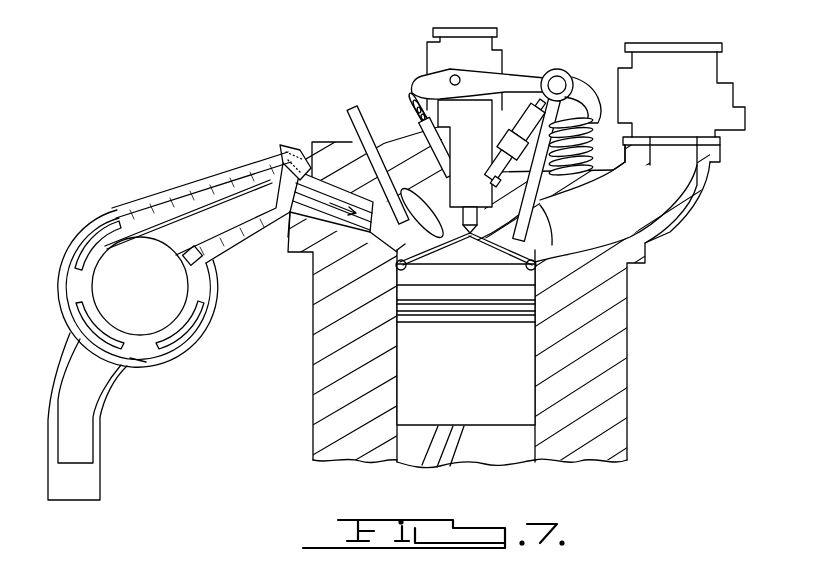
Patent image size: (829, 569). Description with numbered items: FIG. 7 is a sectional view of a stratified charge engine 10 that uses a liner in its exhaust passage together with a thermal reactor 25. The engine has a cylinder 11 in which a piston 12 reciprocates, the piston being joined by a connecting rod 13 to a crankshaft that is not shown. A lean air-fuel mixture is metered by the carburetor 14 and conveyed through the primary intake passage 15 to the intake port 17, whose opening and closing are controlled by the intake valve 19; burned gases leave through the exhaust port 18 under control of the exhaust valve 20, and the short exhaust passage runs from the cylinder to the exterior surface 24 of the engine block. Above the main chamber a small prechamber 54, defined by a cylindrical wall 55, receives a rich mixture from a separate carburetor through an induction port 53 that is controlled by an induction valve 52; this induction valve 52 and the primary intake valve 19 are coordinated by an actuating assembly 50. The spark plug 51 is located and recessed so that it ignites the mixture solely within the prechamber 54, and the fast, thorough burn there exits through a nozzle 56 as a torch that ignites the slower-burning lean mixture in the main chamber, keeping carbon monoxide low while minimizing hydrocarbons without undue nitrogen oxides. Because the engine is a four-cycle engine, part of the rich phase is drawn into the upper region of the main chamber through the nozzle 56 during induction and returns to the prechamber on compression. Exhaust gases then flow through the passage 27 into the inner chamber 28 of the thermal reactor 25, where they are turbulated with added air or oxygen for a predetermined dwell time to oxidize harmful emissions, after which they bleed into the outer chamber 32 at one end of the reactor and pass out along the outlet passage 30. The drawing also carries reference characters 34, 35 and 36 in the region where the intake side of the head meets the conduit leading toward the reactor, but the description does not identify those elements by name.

The engine 10 is at (632, 370).
The cylinder 11 is at (403, 375).
The piston 12 is at (397, 325).
The connecting rod 13 is at (467, 464).
The carburetor 14 is at (665, 67).
The primary intake passage 15 is at (672, 212).
The intake port 17 is at (537, 269).
The exhaust port 18 is at (396, 290).
The intake valve 19 is at (513, 240).
The exhaust valve 20 is at (398, 263).
The exterior surface of the engine block 24 is at (277, 232).
The thermal reactor 25 is at (110, 203).
The passage 27 is at (203, 203).
The inner chamber 28 is at (145, 297).
The outlet passage 30 is at (100, 437).
The outer chamber 32 is at (147, 364).
The intake port 34 is at (356, 228).
The cylinder head 35 is at (295, 240).
The connector 36 is at (302, 147).
The actuating assembly 50 is at (568, 63).
The spark plug 51 is at (503, 120).
The induction valve 52 is at (432, 118).
The induction port 53 is at (450, 190).
The prechamber 54 is at (482, 200).
The cylindrical wall 55 is at (486, 190).
The nozzle 56 is at (467, 242).